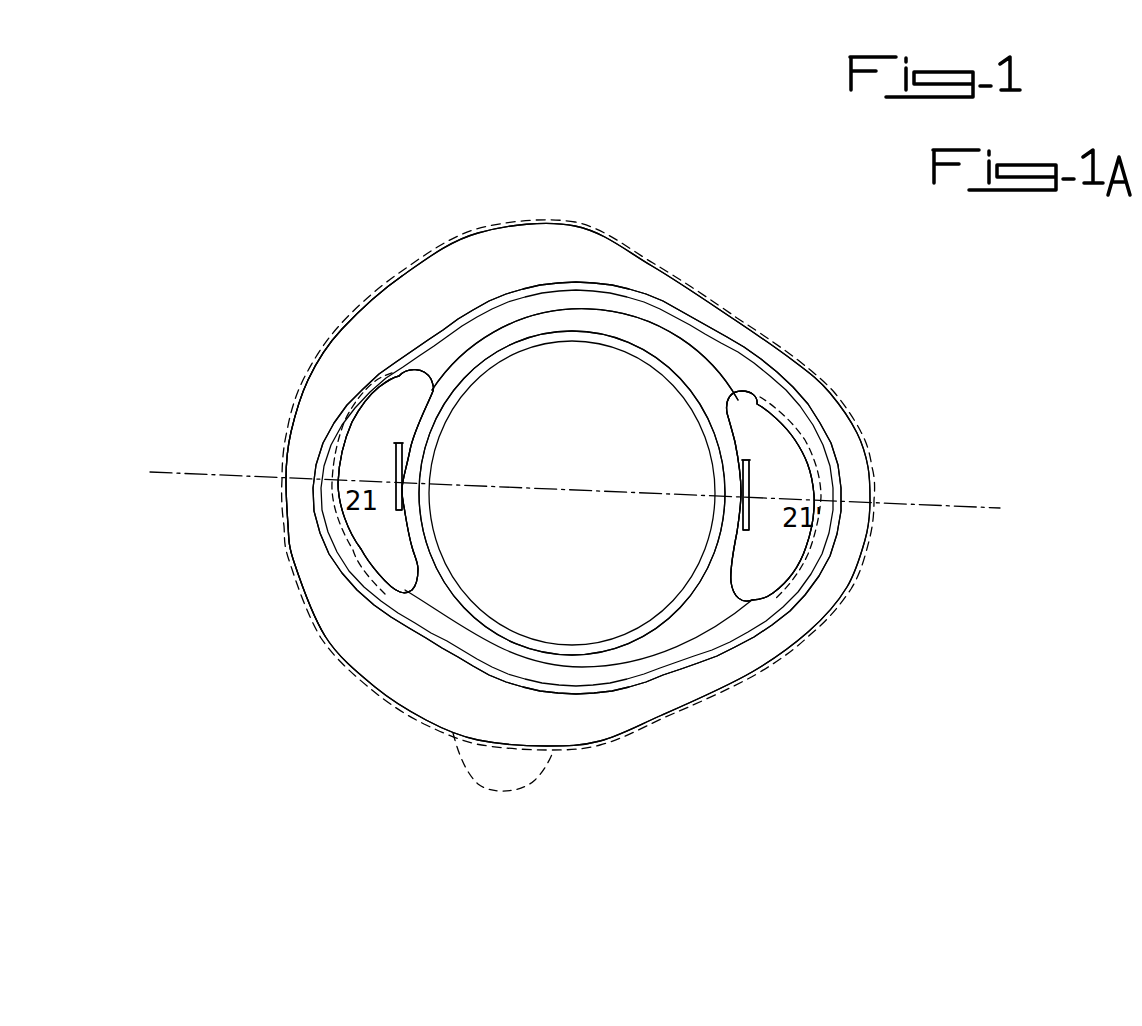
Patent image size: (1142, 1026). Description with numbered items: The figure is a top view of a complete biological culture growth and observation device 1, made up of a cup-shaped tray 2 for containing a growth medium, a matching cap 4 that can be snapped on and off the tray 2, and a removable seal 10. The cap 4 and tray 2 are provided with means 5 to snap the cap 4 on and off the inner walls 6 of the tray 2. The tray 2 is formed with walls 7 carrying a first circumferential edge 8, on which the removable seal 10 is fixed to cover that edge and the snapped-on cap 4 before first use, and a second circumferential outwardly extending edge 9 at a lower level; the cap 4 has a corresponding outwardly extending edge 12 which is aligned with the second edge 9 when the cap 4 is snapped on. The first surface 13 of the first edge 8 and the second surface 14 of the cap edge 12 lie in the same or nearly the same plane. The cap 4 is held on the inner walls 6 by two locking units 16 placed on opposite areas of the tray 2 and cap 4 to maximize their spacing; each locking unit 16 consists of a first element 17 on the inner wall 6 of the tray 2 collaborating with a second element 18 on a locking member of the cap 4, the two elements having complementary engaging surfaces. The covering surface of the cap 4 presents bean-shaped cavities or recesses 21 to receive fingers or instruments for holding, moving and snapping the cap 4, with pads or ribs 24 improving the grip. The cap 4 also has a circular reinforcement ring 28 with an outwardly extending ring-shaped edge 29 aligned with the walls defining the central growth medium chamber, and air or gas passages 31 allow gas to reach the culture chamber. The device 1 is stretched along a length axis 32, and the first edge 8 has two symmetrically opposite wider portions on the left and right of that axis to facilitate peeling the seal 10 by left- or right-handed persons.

The biological culture growth and observation device 1 is at (362, 248).
The cup-shaped tray 2 is at (300, 453).
The cap 4 is at (710, 610).
The means to snap on/off the cap 5 is at (330, 447).
The inner walls of the tray 6 is at (345, 452).
The walls of the tray 7 is at (668, 373).
The first circumferential edge 8 is at (730, 322).
The second circumferential outwardly extending edge 9 is at (638, 668).
The removable seal 10 is at (527, 775).
The circumferential outwardly extending edge of the cap 12 is at (577, 298).
The first surface 13 is at (578, 484).
The second surface 14 is at (495, 318).
The locking unit 16 is at (330, 503).
The first element 17 is at (576, 486).
The second element 18 is at (576, 486).
The cavity or recess 21 is at (572, 486).
The grip improving means 24 is at (396, 500).
The circular reinforcement ring 28 is at (462, 373).
The ring-shaped edge 29 is at (450, 401).
The air or gas passages 31 is at (723, 482).
The length axis 32 is at (593, 501).